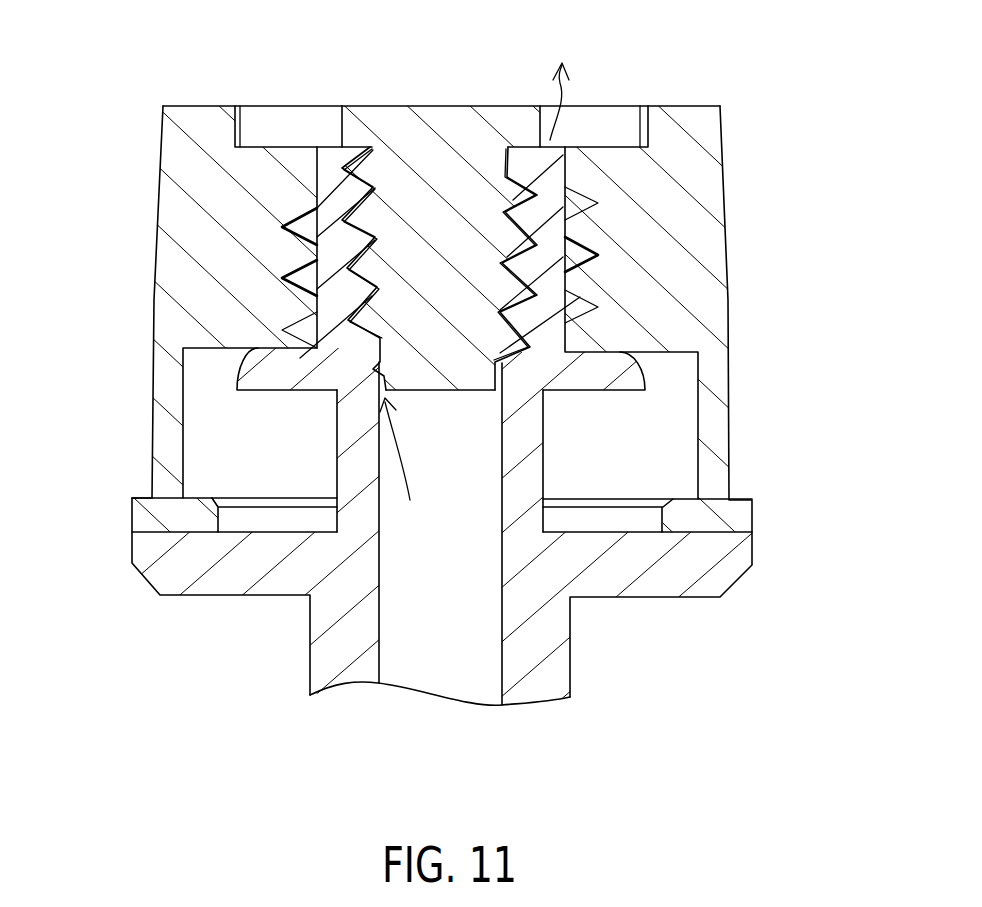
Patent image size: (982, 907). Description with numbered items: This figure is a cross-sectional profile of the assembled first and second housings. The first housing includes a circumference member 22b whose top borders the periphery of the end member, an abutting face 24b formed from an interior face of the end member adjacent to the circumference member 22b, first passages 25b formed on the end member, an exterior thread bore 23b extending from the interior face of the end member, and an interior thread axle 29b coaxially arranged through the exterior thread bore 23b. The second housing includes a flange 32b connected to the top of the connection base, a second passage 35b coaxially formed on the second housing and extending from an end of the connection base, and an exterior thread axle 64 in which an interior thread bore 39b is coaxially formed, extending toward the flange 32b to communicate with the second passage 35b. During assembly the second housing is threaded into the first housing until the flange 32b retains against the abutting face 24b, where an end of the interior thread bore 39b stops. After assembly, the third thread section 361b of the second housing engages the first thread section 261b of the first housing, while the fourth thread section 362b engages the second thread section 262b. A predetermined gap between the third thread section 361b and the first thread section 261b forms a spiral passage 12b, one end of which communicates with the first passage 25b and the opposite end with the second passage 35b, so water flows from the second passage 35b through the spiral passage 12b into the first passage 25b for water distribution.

The spiral passage 12b is at (563, 294).
The circumference member 22b is at (170, 253).
The exterior thread bore 23b is at (313, 188).
The abutting face 24b is at (208, 348).
The first passage 25b is at (600, 125).
The second thread section 262b is at (597, 265).
The fourth thread section 362b is at (573, 253).
The first thread section 261b is at (545, 393).
The third thread section 361b is at (500, 347).
The interior thread axle 29b is at (453, 383).
The flange 32b is at (260, 375).
The second passage 35b is at (428, 652).
The interior thread bore 39b is at (373, 350).
The exterior thread axle 64 is at (328, 170).